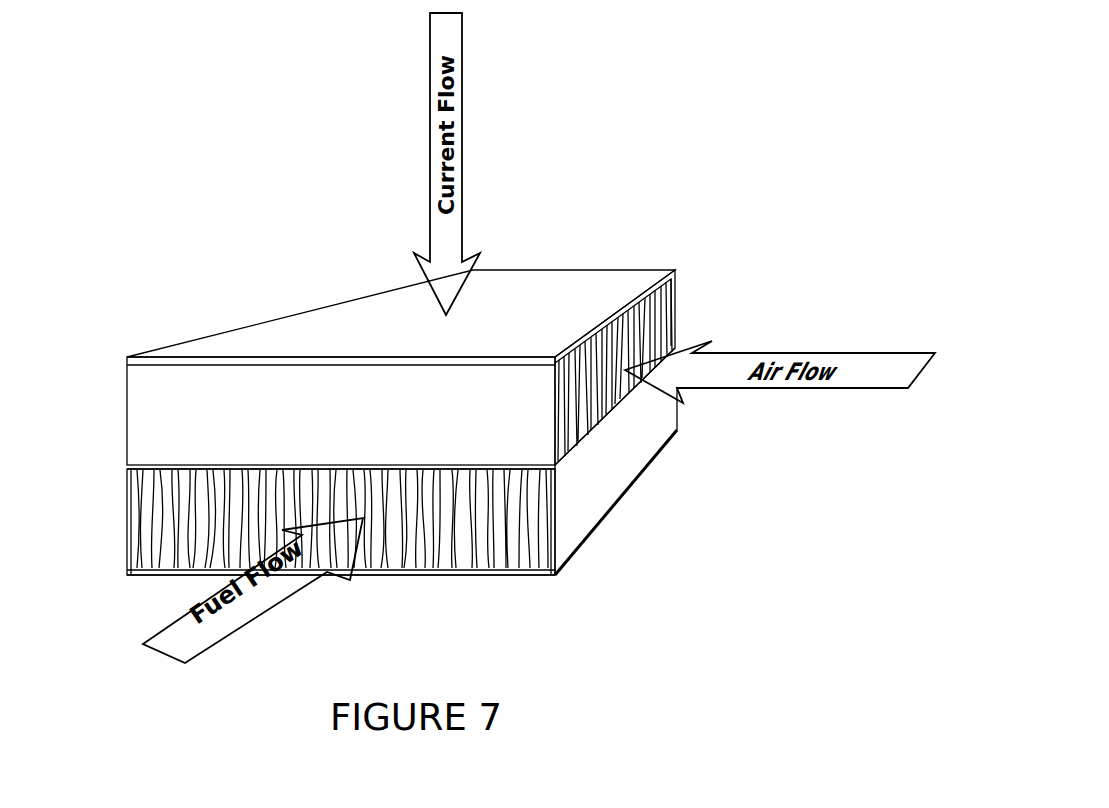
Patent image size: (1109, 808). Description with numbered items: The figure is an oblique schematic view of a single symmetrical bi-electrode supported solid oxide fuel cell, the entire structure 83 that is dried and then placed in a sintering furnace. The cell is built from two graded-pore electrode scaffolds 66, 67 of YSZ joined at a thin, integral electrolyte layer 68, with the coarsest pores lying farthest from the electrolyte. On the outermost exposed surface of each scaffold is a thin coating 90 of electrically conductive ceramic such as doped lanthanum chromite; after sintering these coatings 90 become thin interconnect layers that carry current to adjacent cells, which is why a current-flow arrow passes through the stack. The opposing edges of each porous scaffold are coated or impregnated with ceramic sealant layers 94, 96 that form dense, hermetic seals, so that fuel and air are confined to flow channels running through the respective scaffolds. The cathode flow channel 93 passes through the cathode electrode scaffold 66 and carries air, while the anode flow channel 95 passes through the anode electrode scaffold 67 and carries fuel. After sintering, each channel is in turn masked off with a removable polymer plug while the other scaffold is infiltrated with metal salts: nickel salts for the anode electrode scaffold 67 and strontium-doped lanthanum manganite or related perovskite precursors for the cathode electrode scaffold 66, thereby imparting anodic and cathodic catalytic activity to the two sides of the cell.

The entire structure 83 is at (577, 190).
The coating of electrically conductive ceramic 90 is at (393, 323).
The ceramic sealant layer 94 is at (225, 408).
The ceramic sealant layer 96 is at (127, 538).
The cathode electrode scaffold 66 is at (617, 350).
The anode electrode scaffold 67 is at (527, 510).
The electrolyte layer 68 is at (212, 468).
The cathode flow channel 93 is at (622, 356).
The anode flow channel 95 is at (423, 518).